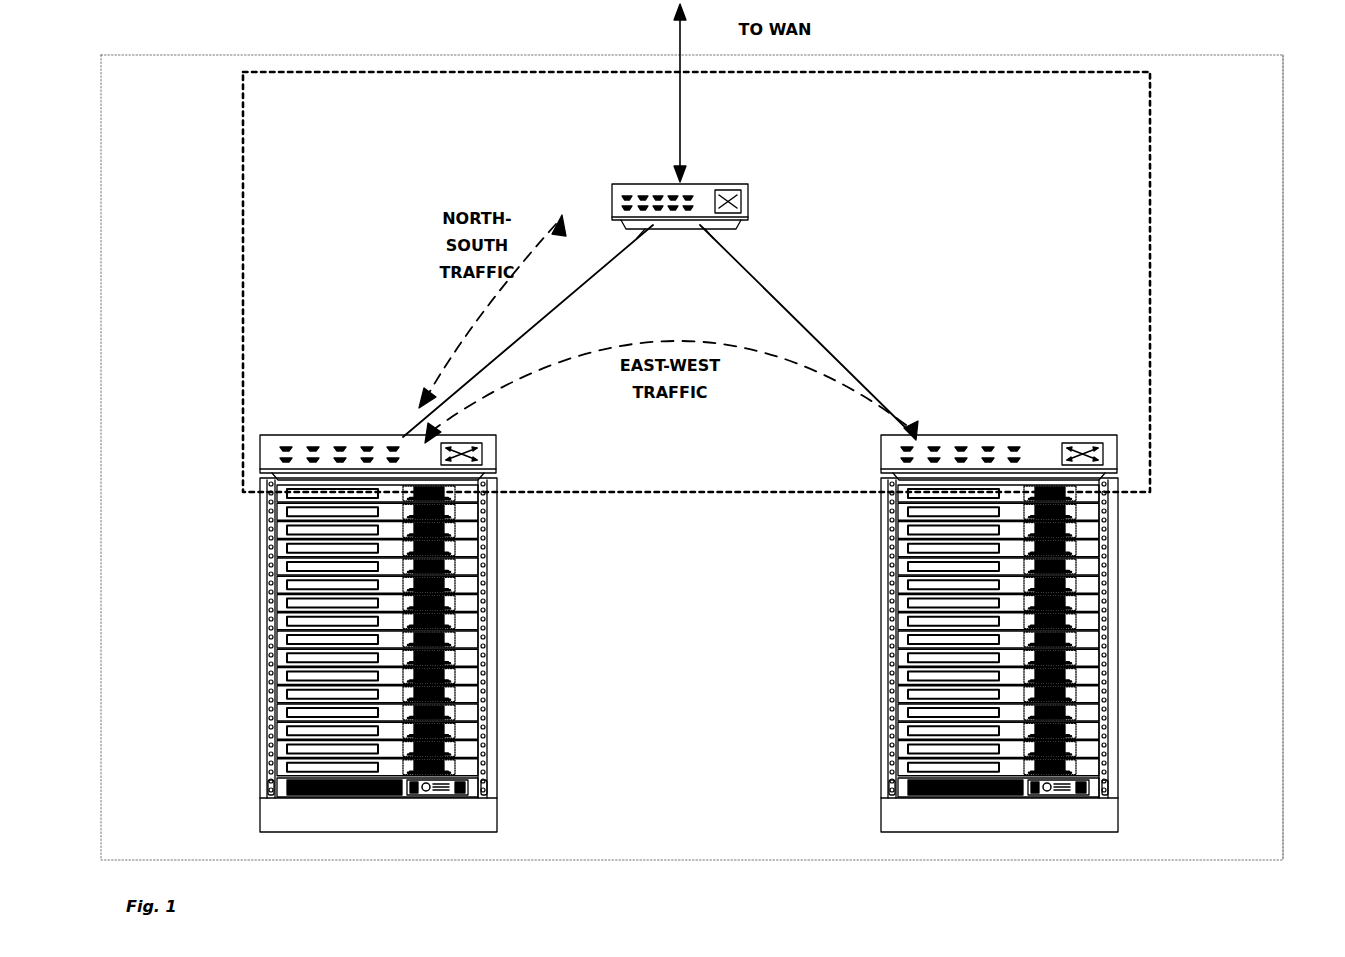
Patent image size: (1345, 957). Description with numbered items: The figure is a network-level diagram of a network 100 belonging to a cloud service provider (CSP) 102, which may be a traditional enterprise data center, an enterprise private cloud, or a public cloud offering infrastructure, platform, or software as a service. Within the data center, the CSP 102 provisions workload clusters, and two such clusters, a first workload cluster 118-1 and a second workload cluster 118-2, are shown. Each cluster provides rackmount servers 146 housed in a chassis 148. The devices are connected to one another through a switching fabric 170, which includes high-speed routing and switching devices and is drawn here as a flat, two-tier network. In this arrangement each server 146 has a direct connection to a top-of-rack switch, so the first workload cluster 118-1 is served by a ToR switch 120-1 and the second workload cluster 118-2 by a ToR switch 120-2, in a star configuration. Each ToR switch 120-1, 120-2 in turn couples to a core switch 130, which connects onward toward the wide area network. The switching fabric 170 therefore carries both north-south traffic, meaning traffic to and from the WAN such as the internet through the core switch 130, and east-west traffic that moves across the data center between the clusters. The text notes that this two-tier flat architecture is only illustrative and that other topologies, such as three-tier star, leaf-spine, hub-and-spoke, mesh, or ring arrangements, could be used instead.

The network 100 is at (212, 352).
The cloud service provider (CSP) 102 is at (1309, 457).
The workload cluster 118-1 is at (349, 655).
The workload cluster 118-2 is at (1058, 655).
The top-of-rack (ToR) switch 120-1 is at (378, 417).
The top-of-rack (ToR) switch 120-2 is at (999, 417).
The core switch 130 is at (728, 179).
The rackmount server 146 is at (420, 590).
The chassis 148 is at (407, 798).
The switching fabric 170 is at (746, 282).